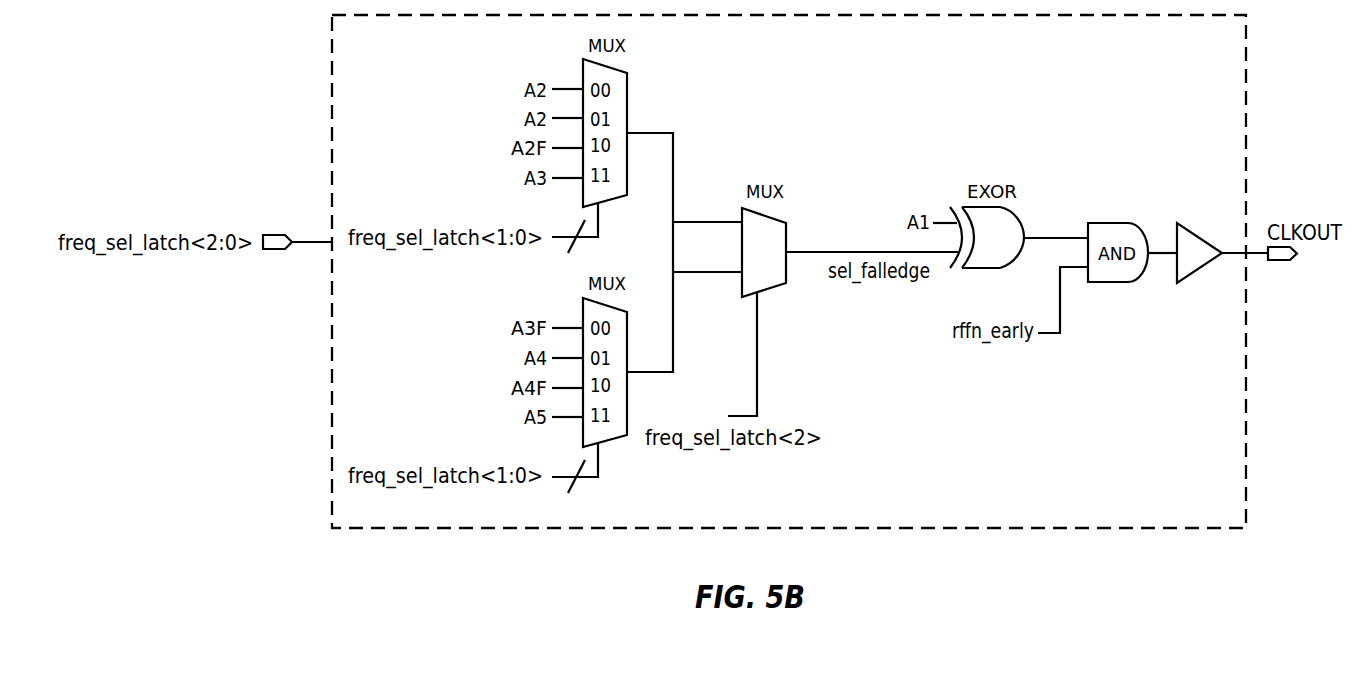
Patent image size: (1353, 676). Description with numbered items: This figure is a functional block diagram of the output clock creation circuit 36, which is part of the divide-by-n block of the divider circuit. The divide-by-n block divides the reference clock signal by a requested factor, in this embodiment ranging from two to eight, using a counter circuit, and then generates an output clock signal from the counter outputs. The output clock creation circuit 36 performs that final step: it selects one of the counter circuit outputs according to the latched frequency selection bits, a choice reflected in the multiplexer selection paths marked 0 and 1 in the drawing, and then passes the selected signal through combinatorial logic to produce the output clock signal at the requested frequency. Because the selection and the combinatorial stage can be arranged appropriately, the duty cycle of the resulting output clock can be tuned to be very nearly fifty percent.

The output clock creation circuit 36 is at (1221, 72).
The multiplexer input 0 is at (719, 230).
The multiplexer input 1 is at (719, 271).